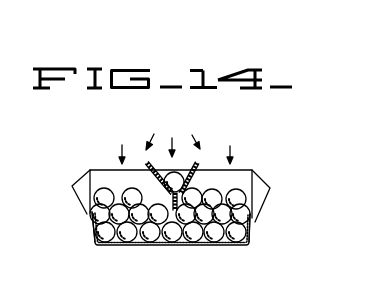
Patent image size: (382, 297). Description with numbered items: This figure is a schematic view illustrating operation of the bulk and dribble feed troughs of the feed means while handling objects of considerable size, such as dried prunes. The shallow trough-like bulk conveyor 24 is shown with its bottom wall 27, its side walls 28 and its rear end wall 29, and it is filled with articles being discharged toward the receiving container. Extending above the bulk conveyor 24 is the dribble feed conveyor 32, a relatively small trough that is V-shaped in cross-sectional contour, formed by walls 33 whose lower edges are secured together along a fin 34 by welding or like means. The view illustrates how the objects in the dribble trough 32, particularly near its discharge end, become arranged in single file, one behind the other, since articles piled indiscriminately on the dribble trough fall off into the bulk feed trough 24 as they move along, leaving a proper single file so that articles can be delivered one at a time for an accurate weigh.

The bulk conveyor 24 is at (136, 246).
The bottom wall 27 is at (190, 245).
The side walls 28 is at (92, 239).
The rear end wall 29 is at (98, 177).
The dribble feed conveyor 32 is at (196, 179).
The walls 33 is at (147, 163).
The fin 34 is at (164, 199).